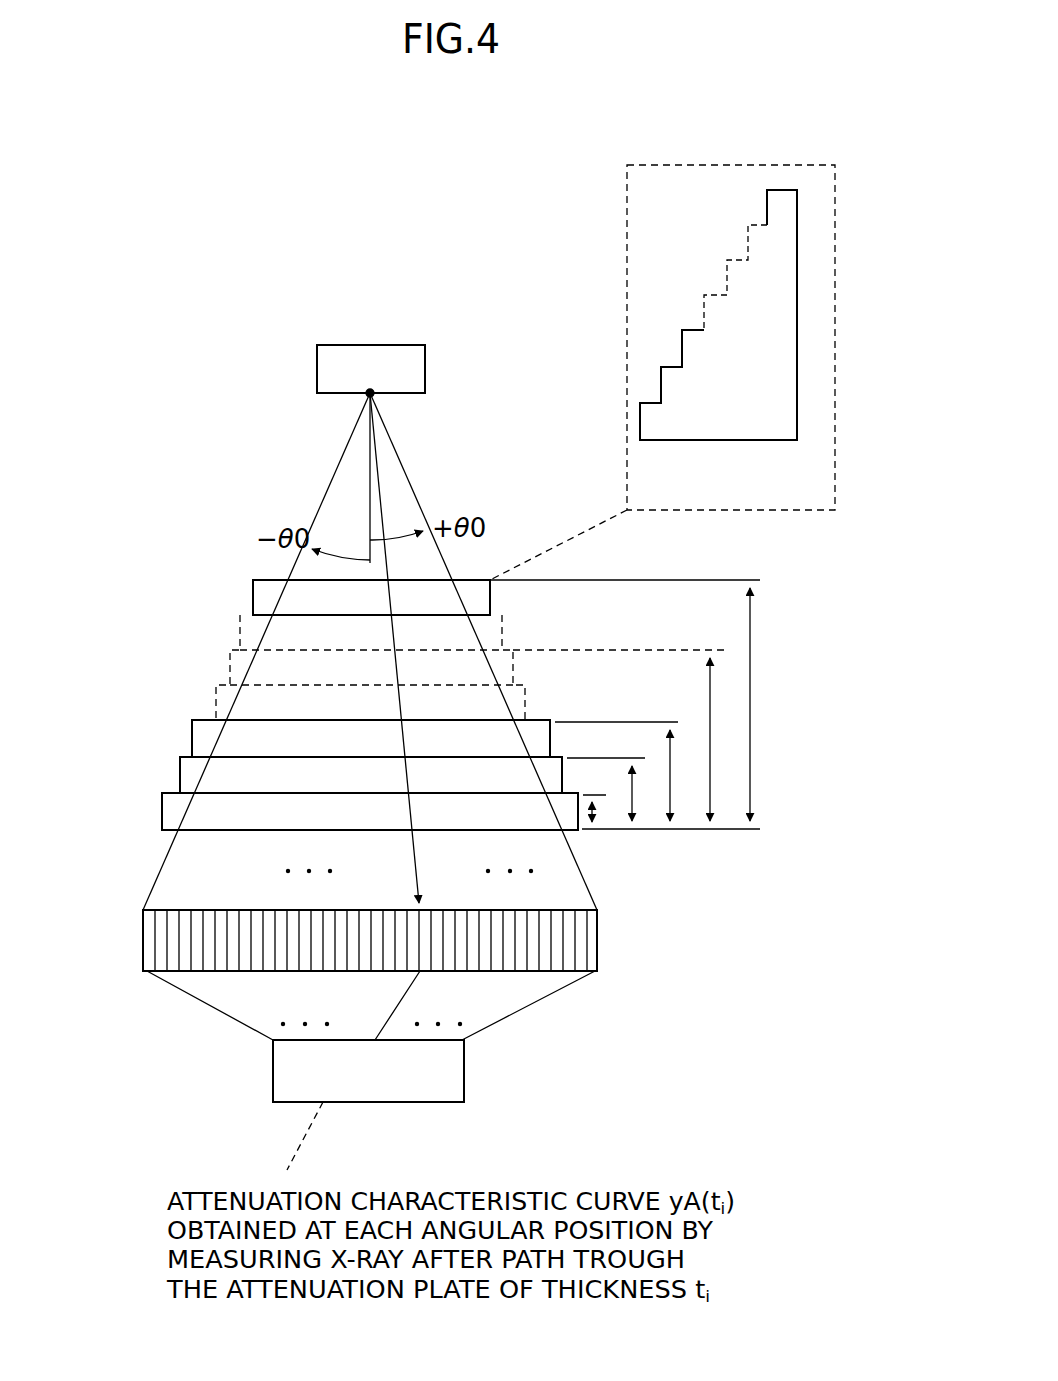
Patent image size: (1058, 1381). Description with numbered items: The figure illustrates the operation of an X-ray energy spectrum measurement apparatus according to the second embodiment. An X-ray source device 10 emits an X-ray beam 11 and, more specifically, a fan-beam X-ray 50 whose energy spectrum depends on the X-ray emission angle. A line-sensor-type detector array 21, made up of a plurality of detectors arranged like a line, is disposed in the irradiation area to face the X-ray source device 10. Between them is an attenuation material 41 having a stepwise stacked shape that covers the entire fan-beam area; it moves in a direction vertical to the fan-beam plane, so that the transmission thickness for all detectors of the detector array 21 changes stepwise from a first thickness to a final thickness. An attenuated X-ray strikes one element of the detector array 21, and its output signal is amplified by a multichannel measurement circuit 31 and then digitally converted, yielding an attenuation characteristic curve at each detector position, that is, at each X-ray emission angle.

The X-ray source device 10 is at (317, 367).
The X-ray beam 11 is at (377, 483).
The fan-beam X-ray 50 is at (415, 493).
The attenuation material 41 is at (196, 720).
The detector array 21 is at (143, 944).
The multichannel measurement circuit 31 is at (273, 1071).